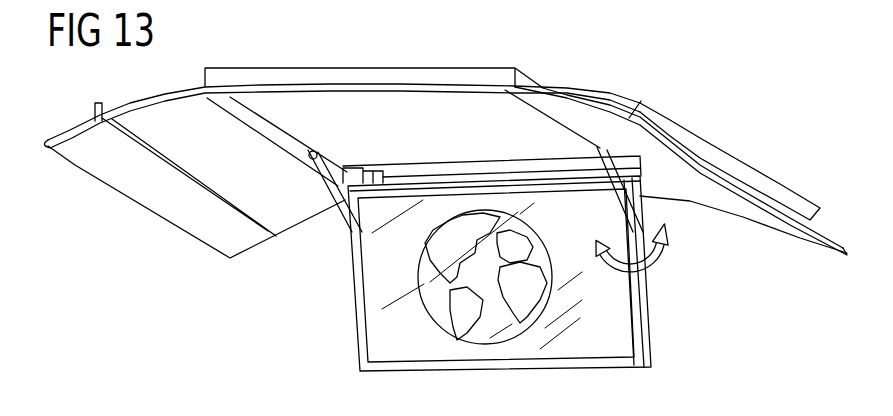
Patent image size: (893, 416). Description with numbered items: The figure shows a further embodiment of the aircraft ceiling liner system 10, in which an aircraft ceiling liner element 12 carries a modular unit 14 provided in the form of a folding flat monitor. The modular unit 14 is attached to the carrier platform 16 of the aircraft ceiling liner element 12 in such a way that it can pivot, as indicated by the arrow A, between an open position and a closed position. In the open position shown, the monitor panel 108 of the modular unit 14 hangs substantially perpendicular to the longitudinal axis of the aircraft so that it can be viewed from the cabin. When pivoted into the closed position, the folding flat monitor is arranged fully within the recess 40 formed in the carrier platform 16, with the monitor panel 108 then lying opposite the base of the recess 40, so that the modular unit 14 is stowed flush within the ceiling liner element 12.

The aircraft ceiling liner system 10 is at (569, 259).
The aircraft ceiling liner element 12 is at (746, 230).
The modular unit 14 is at (662, 333).
The carrier platform 16 is at (696, 115).
The recess 40 is at (311, 120).
The monitor panel 108 is at (385, 294).
The arrow A is at (664, 256).